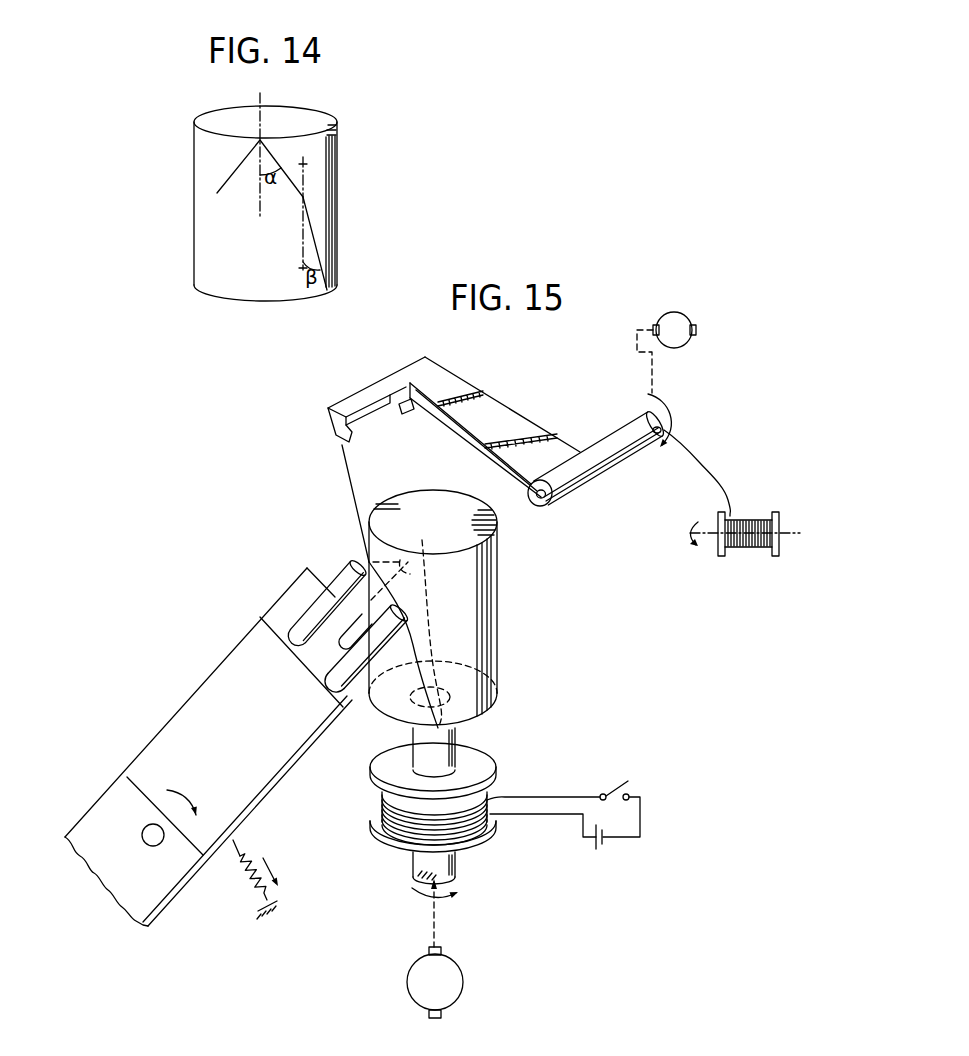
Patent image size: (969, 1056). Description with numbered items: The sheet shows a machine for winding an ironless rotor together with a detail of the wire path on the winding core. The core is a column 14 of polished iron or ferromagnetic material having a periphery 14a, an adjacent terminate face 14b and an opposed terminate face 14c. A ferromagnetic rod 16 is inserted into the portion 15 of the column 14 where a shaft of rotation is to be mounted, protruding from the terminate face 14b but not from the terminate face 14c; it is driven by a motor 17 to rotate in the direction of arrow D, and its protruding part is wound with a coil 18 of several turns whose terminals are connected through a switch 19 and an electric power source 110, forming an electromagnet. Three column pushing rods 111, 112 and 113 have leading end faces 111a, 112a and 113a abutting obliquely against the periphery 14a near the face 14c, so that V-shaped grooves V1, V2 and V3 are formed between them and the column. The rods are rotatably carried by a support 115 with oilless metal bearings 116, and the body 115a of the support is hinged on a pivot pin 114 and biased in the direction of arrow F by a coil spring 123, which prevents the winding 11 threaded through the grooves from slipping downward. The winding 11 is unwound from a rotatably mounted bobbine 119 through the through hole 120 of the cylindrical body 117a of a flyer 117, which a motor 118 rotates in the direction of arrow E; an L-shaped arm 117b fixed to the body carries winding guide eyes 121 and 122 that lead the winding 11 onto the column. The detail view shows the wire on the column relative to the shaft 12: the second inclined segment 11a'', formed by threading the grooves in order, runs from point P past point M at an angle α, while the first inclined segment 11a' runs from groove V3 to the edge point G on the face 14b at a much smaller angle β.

In FIG. 14, the winding 11 is at (315, 250).
In FIG. 15, the winding 11 is at (466, 442).
In FIG. 14, the first inclined segment 11a' is at (356, 277).
In FIG. 14, the second inclined segment 11a'' is at (244, 207).
In FIG. 14, the shaft 12 is at (262, 108).
In FIG. 14, the column 14 is at (344, 146).
In FIG. 15, the column 14 is at (501, 606).
In FIG. 14, the periphery 14a is at (336, 223).
In FIG. 15, the periphery 14a is at (478, 628).
In FIG. 14, the adjacent terminate face 14b is at (283, 304).
In FIG. 15, the adjacent terminate face 14b is at (490, 712).
In FIG. 14, the opposed terminate face 14c is at (293, 113).
In FIG. 15, the opposed terminate face 14c is at (495, 534).
In FIG. 15, the portion 15 is at (440, 697).
In FIG. 15, the rod 16 is at (413, 862).
In FIG. 15, the motor 17 is at (460, 990).
In FIG. 15, the coil 18 is at (382, 799).
In FIG. 15, the switch 19 is at (614, 786).
In FIG. 15, the electric power source 110 is at (592, 846).
In FIG. 15, the column pushing rod 111 is at (340, 644).
In FIG. 15, the leading end face 111a is at (410, 558).
In FIG. 15, the column pushing rod 112 is at (310, 613).
In FIG. 15, the leading end face 112a is at (350, 562).
In FIG. 15, the column pushing rod 113 is at (340, 678).
In FIG. 15, the leading end face 113a is at (420, 614).
In FIG. 15, the pivot pin 114 is at (150, 841).
In FIG. 15, the support 115 is at (127, 777).
In FIG. 15, the body 115a is at (258, 797).
In FIG. 15, the oilless metal bearing 116 is at (268, 625).
In FIG. 15, the flyer 117 is at (597, 432).
In FIG. 15, the cylindrical body 117a is at (604, 473).
In FIG. 15, the L-shaped arm 117b is at (487, 405).
In FIG. 15, the motor 118 is at (673, 312).
In FIG. 15, the bobbine 119 is at (778, 558).
In FIG. 15, the through hole 120 is at (548, 506).
In FIG. 15, the winding guide eye 121 is at (403, 415).
In FIG. 15, the winding guide eye 122 is at (330, 436).
In FIG. 15, the coil spring 123 is at (250, 878).
In FIG. 14, the point P is at (258, 138).
In FIG. 14, the point M is at (303, 197).
In FIG. 14, the edge point G is at (327, 290).
In FIG. 15, the arrow E is at (650, 414).
In FIG. 15, the arrow D is at (430, 913).
In FIG. 15, the arrow F is at (275, 869).
In FIG. 15, the V-shaped groove V1 is at (422, 577).
In FIG. 15, the V-shaped groove V2 is at (364, 558).
In FIG. 15, the V-shaped groove V3 is at (406, 611).